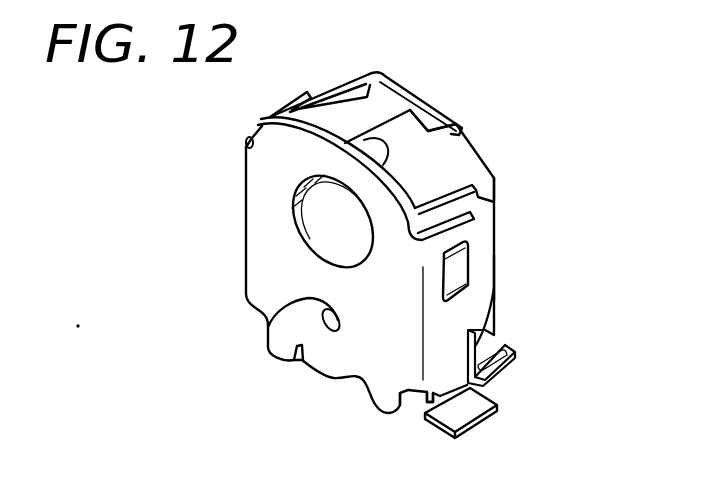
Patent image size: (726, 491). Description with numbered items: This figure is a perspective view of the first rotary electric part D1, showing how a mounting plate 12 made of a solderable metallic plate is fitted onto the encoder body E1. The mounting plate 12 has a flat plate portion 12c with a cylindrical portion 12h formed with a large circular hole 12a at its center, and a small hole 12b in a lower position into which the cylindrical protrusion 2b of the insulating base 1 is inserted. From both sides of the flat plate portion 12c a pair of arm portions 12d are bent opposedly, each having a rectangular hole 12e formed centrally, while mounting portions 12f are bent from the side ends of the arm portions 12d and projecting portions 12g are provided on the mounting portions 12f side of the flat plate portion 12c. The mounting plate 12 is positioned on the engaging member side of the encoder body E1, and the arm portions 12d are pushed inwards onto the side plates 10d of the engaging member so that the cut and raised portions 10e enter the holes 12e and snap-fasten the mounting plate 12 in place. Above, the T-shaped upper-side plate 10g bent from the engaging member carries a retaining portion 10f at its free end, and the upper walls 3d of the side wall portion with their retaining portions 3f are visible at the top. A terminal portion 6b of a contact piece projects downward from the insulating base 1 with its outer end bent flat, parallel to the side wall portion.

The insulating base 1 is at (498, 173).
The cylindrical protrusion 2b is at (330, 332).
The upper walls 3d is at (452, 146).
The retaining portions 3f is at (430, 124).
The terminal portion 6b is at (518, 349).
The side plates 10d is at (455, 207).
The cut and raised portions 10e is at (455, 268).
The retaining portion 10f is at (390, 100).
The T-shaped upper-side plate 10g is at (342, 120).
The mounting plate 12 is at (230, 257).
The large circular hole 12a is at (315, 205).
The small hole 12b is at (280, 315).
The flat plate portion 12c is at (265, 132).
The arm portions 12d is at (465, 318).
The rectangular holes 12e is at (488, 296).
The mounting portions 12f is at (465, 413).
The projecting portions 12g is at (282, 352).
The cylindrical portion 12h is at (300, 223).
The first rotary electric part D1 is at (246, 160).
The encoder body E1 is at (481, 153).